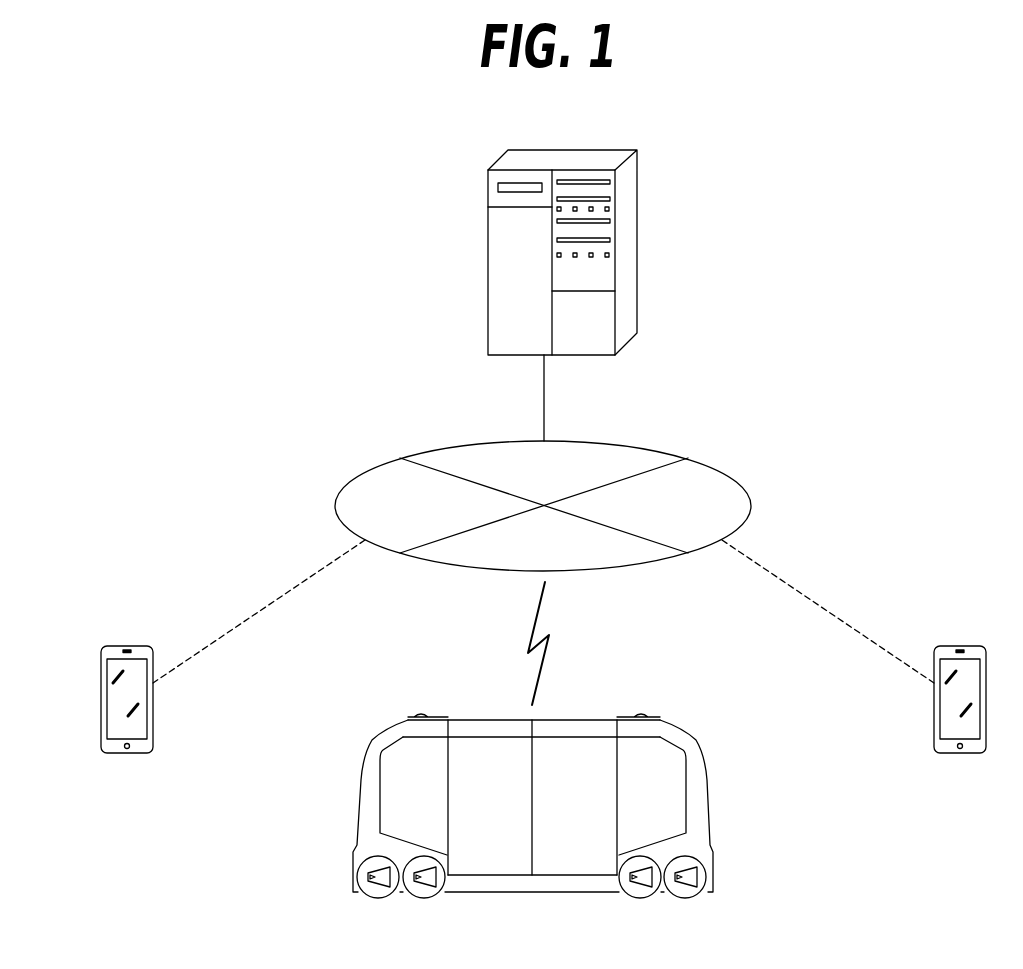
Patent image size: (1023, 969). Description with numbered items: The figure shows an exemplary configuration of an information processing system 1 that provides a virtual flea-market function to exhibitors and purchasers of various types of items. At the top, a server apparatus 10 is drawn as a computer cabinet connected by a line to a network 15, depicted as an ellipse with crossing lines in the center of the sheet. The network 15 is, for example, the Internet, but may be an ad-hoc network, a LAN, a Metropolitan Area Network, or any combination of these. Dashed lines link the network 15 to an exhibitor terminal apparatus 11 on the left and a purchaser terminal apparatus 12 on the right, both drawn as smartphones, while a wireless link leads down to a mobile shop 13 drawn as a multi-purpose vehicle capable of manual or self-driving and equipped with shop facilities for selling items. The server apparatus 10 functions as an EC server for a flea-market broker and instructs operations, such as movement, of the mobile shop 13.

The information processing system 1 is at (887, 262).
The server apparatus 10 is at (488, 215).
The exhibitor terminal apparatus 11 is at (131, 646).
The purchaser terminal apparatus 12 is at (970, 646).
The mobile shop 13 is at (392, 728).
The network 15 is at (750, 497).